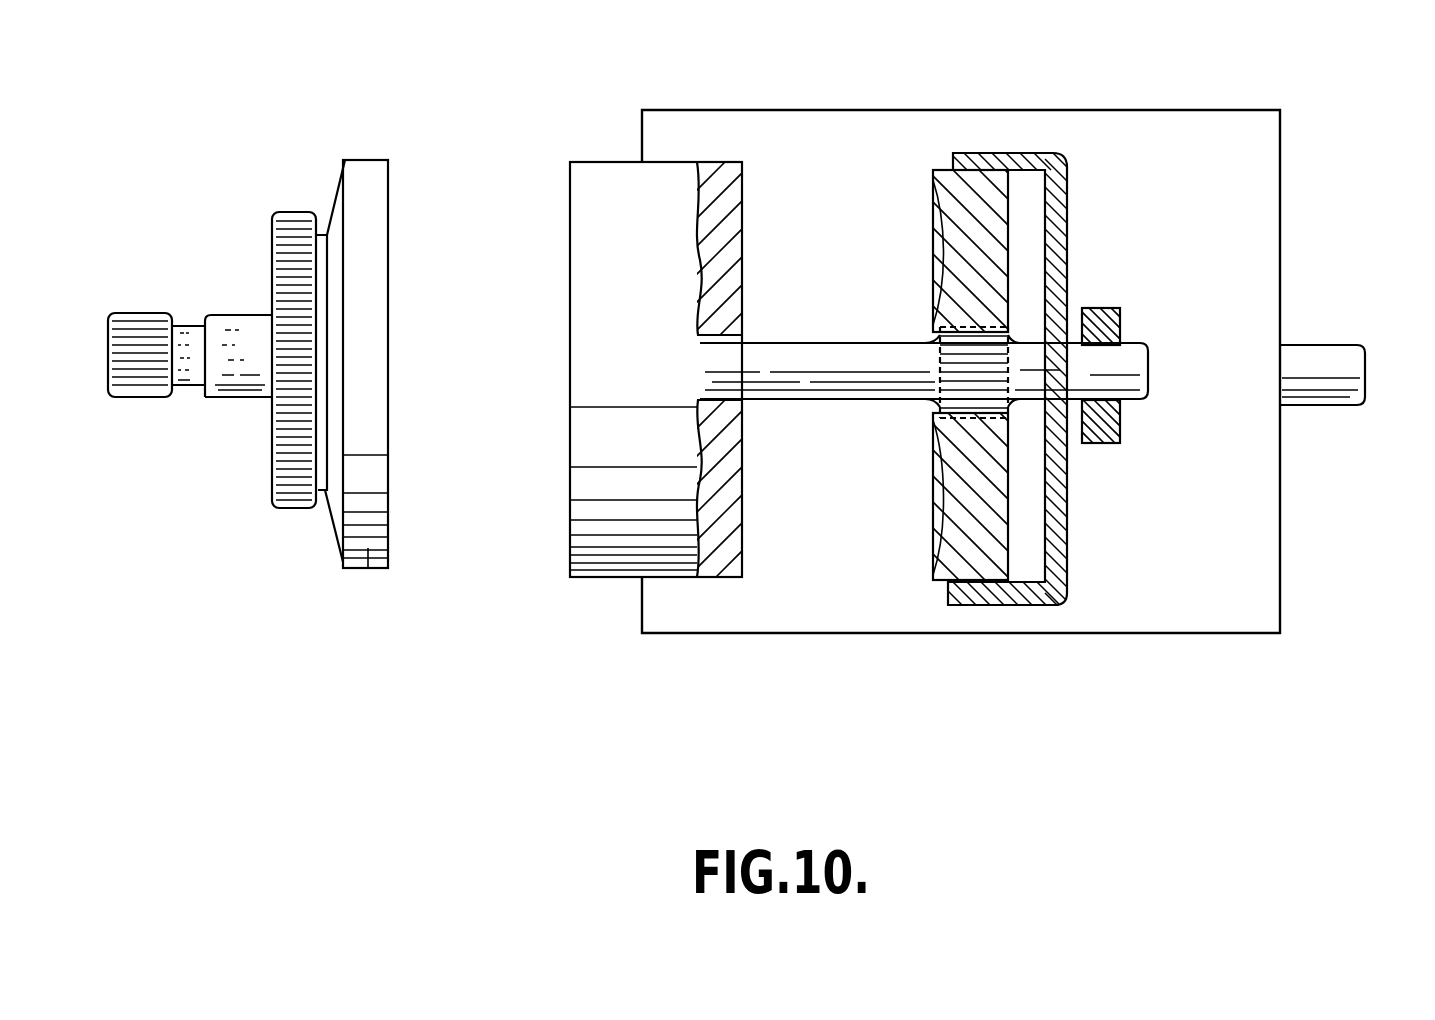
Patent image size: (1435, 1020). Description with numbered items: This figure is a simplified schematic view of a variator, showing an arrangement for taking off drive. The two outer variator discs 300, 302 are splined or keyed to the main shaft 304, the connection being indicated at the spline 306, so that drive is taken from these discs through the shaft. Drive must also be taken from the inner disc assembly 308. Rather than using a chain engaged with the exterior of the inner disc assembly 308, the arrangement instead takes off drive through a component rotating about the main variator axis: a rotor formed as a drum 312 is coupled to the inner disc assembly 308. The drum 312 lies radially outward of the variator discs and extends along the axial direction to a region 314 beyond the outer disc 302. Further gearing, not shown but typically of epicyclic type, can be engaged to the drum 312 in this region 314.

The outer variator disc 300 is at (368, 568).
The outer variator disc 302 is at (933, 580).
The main shaft 304 is at (838, 357).
The spline 306 is at (927, 408).
The inner disc assembly 308 is at (668, 345).
The drum 312 is at (1085, 110).
The region 314 is at (1322, 410).